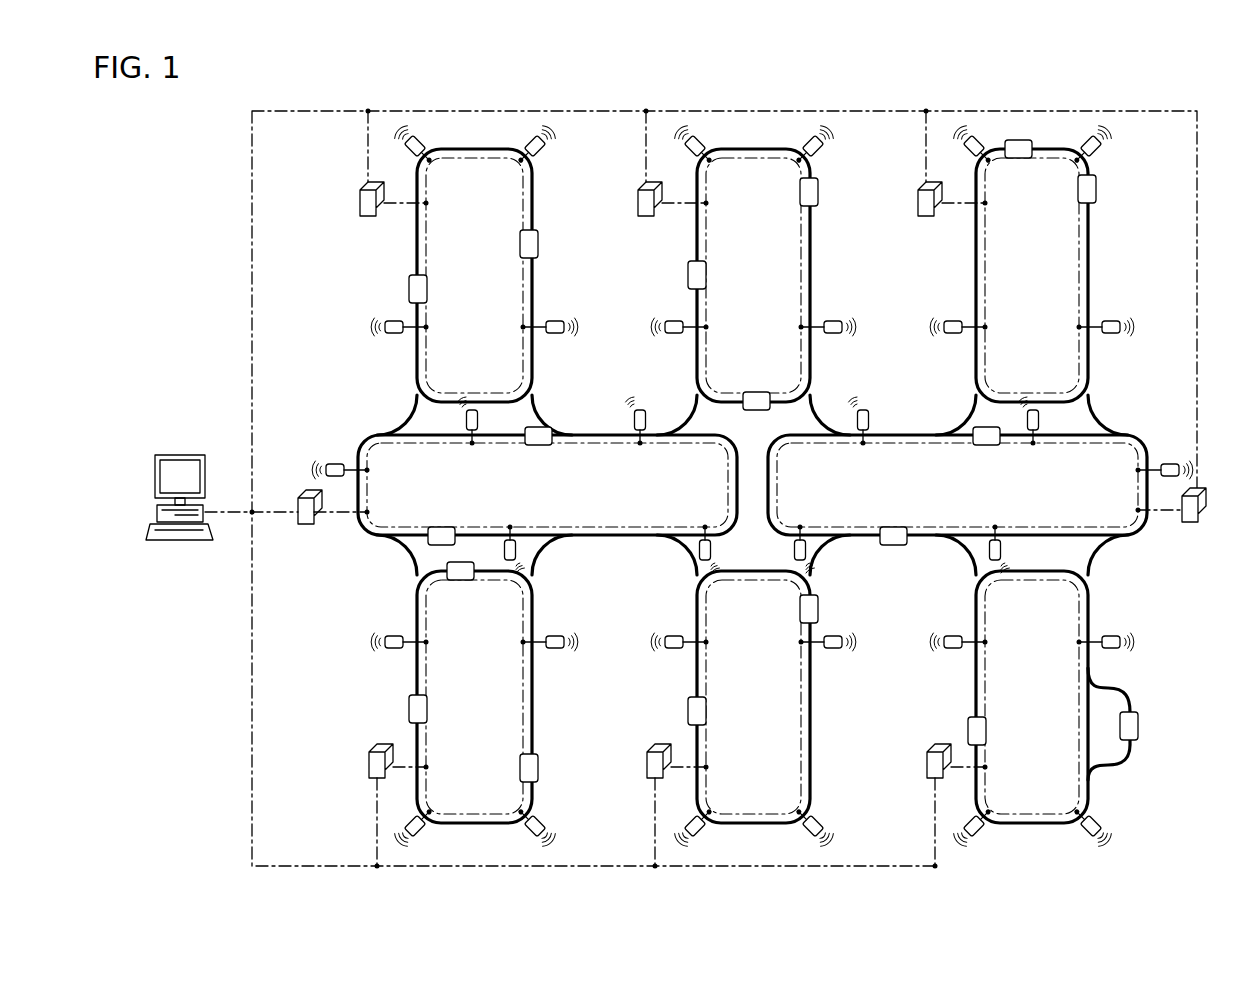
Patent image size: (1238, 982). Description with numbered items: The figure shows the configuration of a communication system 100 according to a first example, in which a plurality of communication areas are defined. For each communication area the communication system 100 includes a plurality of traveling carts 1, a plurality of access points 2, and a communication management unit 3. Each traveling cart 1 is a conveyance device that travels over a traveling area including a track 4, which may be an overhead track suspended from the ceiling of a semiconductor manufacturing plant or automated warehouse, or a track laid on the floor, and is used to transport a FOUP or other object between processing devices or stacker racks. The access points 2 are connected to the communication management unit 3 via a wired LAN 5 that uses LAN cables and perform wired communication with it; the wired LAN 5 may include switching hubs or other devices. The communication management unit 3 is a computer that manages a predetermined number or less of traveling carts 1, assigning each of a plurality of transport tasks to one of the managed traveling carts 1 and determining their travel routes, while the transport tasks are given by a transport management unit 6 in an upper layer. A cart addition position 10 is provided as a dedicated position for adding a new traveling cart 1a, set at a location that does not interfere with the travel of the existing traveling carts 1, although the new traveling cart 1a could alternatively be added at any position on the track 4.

The communication system 100 is at (216, 140).
The traveling cart 1 is at (538, 243).
The new traveling cart 1a is at (1138, 725).
The access point 2 is at (390, 321).
The communication management unit 3 is at (360, 200).
The track 4 is at (533, 275).
The wired LAN 5 is at (427, 232).
The transport management unit 6 is at (155, 478).
The cart addition position 10 is at (1122, 782).